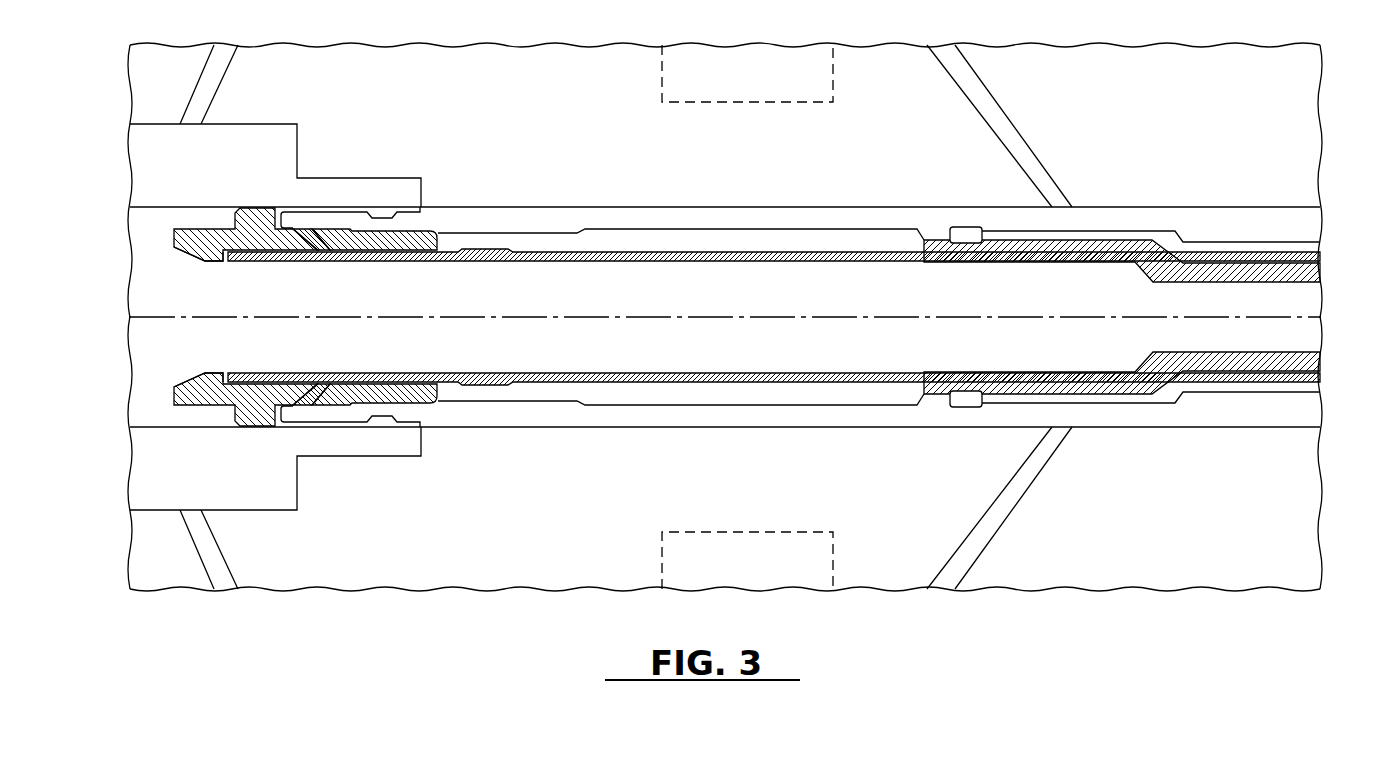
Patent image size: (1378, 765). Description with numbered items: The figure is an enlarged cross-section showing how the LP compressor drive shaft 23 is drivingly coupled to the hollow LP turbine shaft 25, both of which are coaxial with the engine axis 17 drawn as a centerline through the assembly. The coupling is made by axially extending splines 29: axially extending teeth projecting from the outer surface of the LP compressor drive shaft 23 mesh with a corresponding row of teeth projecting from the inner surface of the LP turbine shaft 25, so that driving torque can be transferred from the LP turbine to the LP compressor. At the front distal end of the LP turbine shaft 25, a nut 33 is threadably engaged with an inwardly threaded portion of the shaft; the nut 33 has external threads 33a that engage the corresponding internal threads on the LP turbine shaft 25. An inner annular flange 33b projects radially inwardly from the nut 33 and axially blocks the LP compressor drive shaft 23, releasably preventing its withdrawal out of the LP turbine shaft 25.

The engine axis 17 is at (1300, 317).
The LP compressor drive shaft 23 is at (740, 375).
The LP turbine shaft 25 is at (870, 217).
The axially extending splines 29 is at (1069, 240).
The nut 33 is at (258, 212).
The external threads 33a is at (385, 403).
The inner annular flange 33b is at (230, 372).